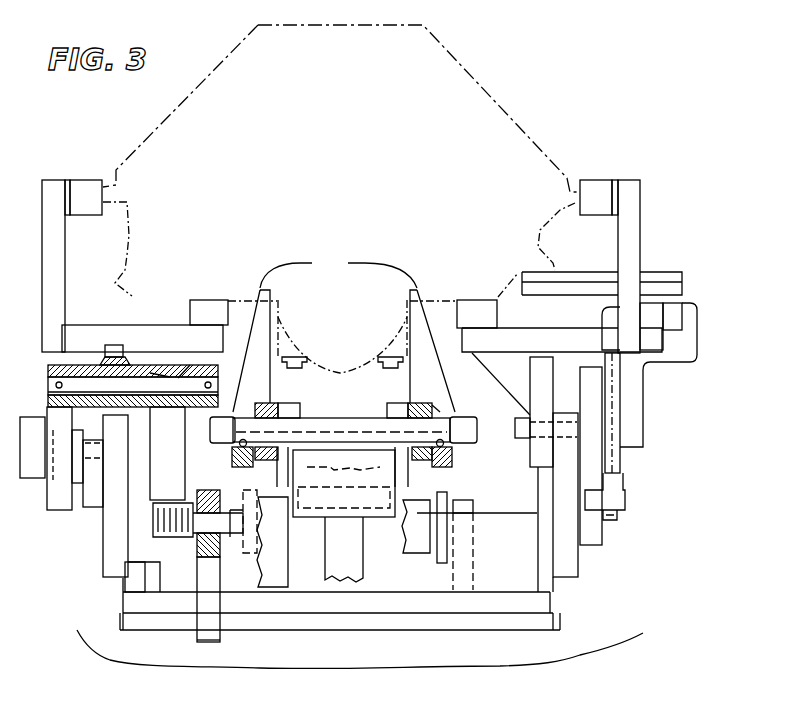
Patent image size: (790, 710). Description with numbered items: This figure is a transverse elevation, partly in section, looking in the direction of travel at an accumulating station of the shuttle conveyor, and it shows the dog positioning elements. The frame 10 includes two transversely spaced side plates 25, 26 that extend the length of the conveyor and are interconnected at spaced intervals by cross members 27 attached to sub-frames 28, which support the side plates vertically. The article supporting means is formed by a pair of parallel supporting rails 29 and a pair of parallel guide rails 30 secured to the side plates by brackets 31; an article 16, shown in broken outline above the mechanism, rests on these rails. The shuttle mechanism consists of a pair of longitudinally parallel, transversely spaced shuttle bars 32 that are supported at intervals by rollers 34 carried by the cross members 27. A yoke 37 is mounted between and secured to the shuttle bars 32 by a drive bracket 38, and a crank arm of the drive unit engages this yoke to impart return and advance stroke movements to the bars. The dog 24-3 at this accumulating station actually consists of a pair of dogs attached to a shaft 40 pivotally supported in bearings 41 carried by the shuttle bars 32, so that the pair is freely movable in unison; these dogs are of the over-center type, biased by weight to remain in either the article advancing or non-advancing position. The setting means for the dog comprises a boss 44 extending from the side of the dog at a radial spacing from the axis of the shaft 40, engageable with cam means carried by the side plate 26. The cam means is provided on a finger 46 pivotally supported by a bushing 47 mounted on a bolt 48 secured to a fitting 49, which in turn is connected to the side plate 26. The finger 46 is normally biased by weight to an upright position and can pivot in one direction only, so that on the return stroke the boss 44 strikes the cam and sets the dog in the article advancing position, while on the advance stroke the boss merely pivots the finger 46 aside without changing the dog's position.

The frame 10 is at (563, 623).
The article 16 is at (491, 97).
The dog 24-3 is at (344, 333).
The side plate 25 is at (583, 547).
The side plate 26 is at (103, 548).
The cross member 27 is at (125, 602).
The sub-frame 28 is at (80, 643).
The supporting rail 29 is at (212, 300).
The guide rail 30 is at (87, 180).
The bracket 31 is at (42, 265).
The shuttle bar 32 is at (270, 405).
The roller 34 is at (447, 495).
The yoke 37 is at (363, 565).
The drive bracket 38 is at (366, 518).
The shaft 40 is at (365, 418).
The bearing 41 is at (430, 413).
The boss 44 is at (212, 428).
The finger 46 is at (202, 642).
The bushing 47 is at (198, 552).
The bolt 48 is at (232, 540).
The fitting 49 is at (160, 567).